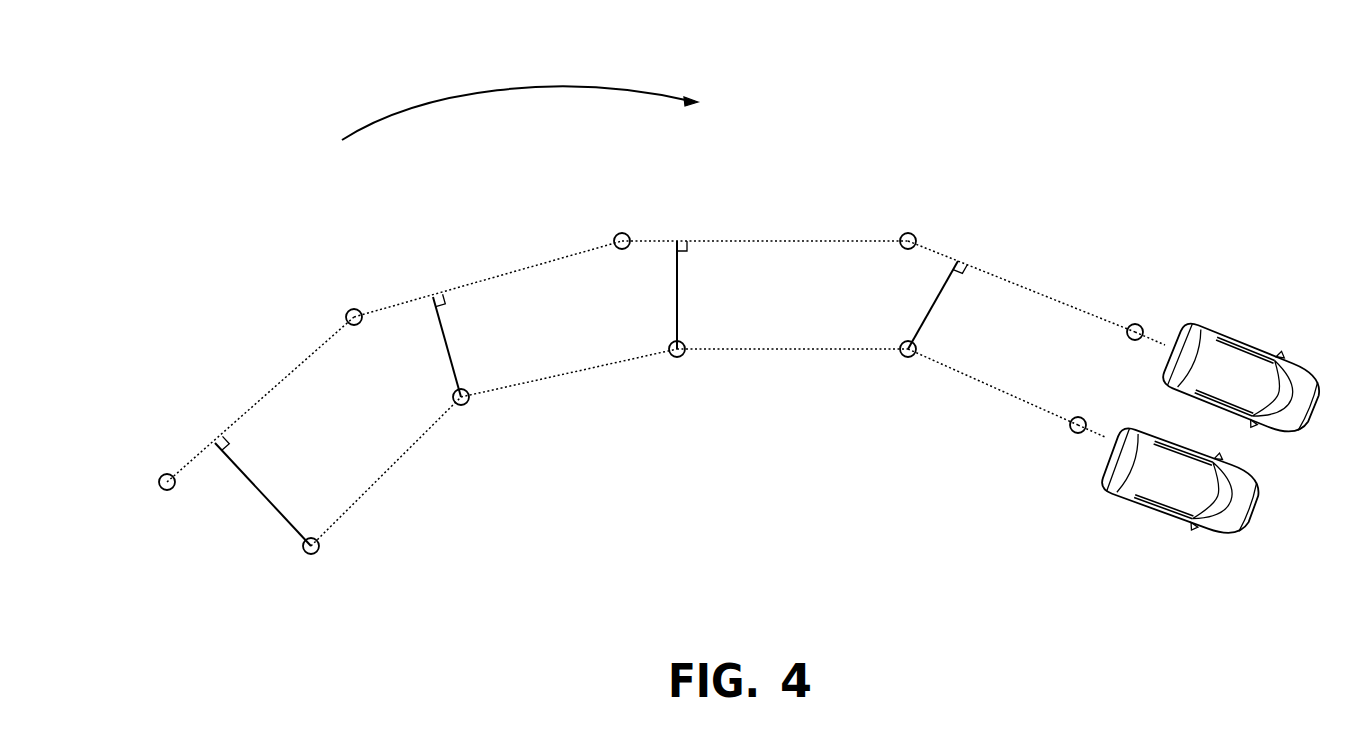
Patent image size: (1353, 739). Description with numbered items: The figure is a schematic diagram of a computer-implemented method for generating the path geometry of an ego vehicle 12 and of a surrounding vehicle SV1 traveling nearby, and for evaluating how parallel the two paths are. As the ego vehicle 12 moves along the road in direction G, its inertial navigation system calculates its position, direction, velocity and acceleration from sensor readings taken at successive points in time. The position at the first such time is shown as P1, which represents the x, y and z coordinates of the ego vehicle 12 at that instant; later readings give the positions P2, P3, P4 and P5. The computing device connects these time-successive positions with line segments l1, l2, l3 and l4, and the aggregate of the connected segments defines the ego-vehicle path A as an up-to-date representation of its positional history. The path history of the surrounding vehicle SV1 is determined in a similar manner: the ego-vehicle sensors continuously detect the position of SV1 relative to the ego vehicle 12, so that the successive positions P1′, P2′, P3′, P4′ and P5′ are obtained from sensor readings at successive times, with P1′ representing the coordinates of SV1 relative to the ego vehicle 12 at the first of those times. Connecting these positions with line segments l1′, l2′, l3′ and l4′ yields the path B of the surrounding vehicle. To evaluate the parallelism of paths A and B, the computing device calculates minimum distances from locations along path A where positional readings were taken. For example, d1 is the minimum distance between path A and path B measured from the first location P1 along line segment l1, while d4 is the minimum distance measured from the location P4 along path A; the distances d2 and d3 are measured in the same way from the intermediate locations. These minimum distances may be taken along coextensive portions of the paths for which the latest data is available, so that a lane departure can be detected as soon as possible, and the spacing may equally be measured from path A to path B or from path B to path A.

The direction of movement G is at (520, 99).
The first vehicle position P1 is at (310, 554).
The second vehicle position P2 is at (461, 405).
The third vehicle position P3 is at (677, 357).
The fourth vehicle position P4 is at (910, 358).
The fifth vehicle position P5 is at (1077, 433).
The first surrounding-vehicle position P1′ is at (166, 474).
The second surrounding-vehicle position P2′ is at (348, 312).
The third surrounding-vehicle position P3′ is at (619, 234).
The fourth surrounding-vehicle position P4′ is at (908, 233).
The fifth surrounding-vehicle position P5′ is at (1133, 324).
The first line segment l1 is at (377, 482).
The second line segment l2 is at (557, 375).
The third line segment l3 is at (777, 350).
The fourth line segment l4 is at (980, 382).
The first surrounding-vehicle line segment l1′ is at (233, 332).
The second surrounding-vehicle line segment l2′ is at (475, 196).
The third surrounding-vehicle line segment l3′ is at (832, 146).
The fourth surrounding-vehicle line segment l4′ is at (1087, 233).
The first minimum distance d1 is at (253, 490).
The second minimum distance d2 is at (440, 323).
The third minimum distance d3 is at (678, 285).
The fourth minimum distance d4 is at (933, 292).
The ego-vehicle path A is at (993, 443).
The surrounding-vehicle path B is at (1021, 257).
The surrounding vehicle SV1 is at (1243, 380).
The ego vehicle 12 is at (1182, 482).